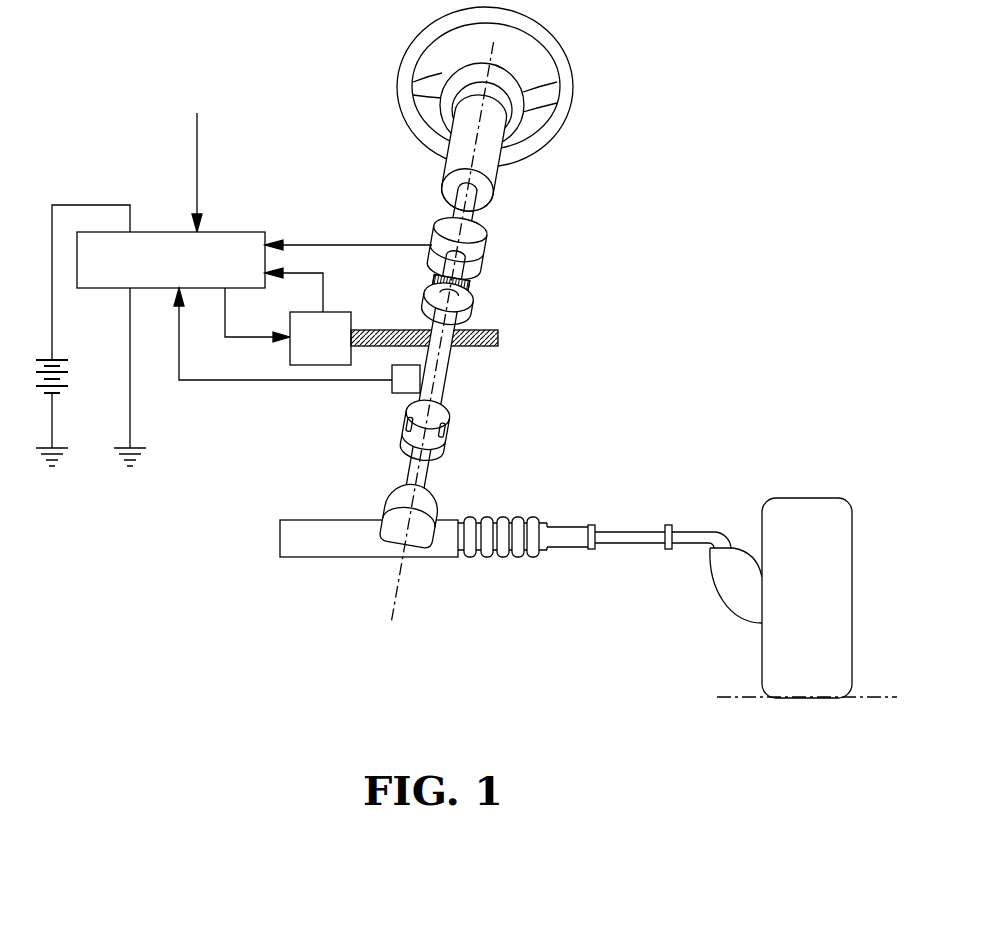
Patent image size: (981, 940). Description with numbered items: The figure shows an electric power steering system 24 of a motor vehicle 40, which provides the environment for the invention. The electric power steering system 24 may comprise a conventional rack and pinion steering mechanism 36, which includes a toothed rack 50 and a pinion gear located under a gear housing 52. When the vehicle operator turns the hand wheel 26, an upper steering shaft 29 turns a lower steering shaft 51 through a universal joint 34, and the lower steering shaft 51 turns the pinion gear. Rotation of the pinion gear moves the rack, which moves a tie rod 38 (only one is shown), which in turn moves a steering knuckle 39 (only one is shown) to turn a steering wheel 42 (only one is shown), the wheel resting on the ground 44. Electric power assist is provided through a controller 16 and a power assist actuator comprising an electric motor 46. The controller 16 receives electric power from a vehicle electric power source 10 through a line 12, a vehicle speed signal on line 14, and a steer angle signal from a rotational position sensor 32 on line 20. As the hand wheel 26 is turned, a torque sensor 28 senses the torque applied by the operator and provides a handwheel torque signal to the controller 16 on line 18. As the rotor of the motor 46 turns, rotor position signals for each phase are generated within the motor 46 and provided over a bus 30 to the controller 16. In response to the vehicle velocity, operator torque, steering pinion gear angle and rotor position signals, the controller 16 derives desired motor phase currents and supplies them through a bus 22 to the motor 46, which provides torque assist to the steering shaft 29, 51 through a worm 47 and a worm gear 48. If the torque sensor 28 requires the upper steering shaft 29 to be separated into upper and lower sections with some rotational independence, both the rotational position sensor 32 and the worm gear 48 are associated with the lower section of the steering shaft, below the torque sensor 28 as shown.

The vehicle electric power source 10 is at (57, 355).
The line 12 is at (72, 202).
The line 14 is at (197, 155).
The controller 16 is at (165, 237).
The line 18 is at (327, 243).
The line 20 is at (193, 382).
The bus 22 is at (239, 340).
The electric power steering system 24 is at (648, 218).
The hand wheel 26 is at (542, 40).
The torque sensor 28 is at (438, 232).
The upper steering shaft 29 is at (472, 188).
The bus 30 is at (316, 288).
The rotational position sensor 32 is at (392, 388).
The universal joint 34 is at (448, 428).
The rack and pinion steering mechanism 36 is at (504, 556).
The tie rod 38 is at (623, 538).
The steering knuckle 39 is at (742, 598).
The motor vehicle 40 is at (720, 360).
The steering wheel 42 is at (813, 508).
The ground surface 44 is at (859, 702).
The electric motor 46 is at (347, 313).
The worm 47 is at (494, 338).
The worm gear 48 is at (467, 303).
The toothed rack 50 is at (331, 548).
The lower steering shaft 51 is at (426, 478).
The gear housing 52 is at (398, 500).